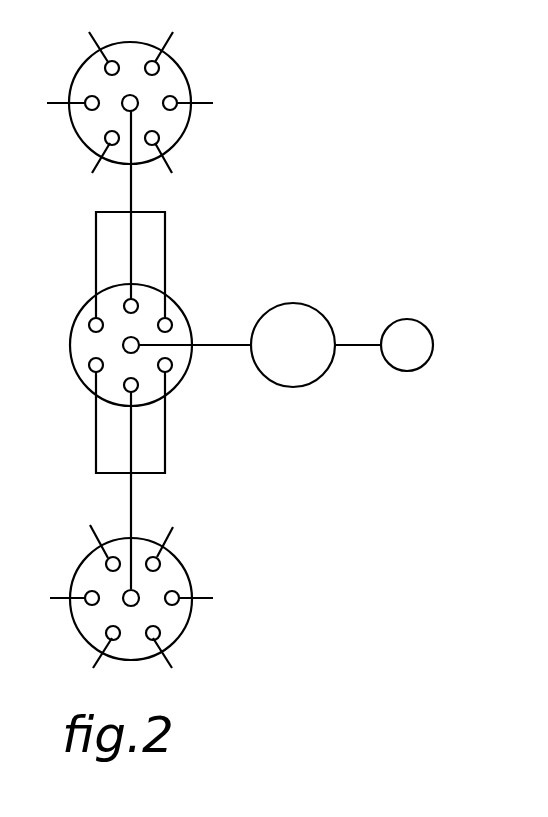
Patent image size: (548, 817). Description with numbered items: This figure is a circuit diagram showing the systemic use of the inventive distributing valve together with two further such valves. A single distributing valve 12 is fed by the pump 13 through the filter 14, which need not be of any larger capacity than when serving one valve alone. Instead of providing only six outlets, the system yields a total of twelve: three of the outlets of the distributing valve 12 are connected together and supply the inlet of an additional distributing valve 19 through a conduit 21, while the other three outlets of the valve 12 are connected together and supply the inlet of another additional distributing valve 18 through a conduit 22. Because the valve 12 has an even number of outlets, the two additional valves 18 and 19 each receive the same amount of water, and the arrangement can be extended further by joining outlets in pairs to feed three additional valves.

The distributing valve 12 is at (185, 315).
The pump 13 is at (428, 328).
The filter 14 is at (328, 318).
The distributing valve 18 is at (187, 627).
The distributing valve 19 is at (187, 75).
The conduit 21 is at (131, 187).
The conduit 22 is at (133, 508).